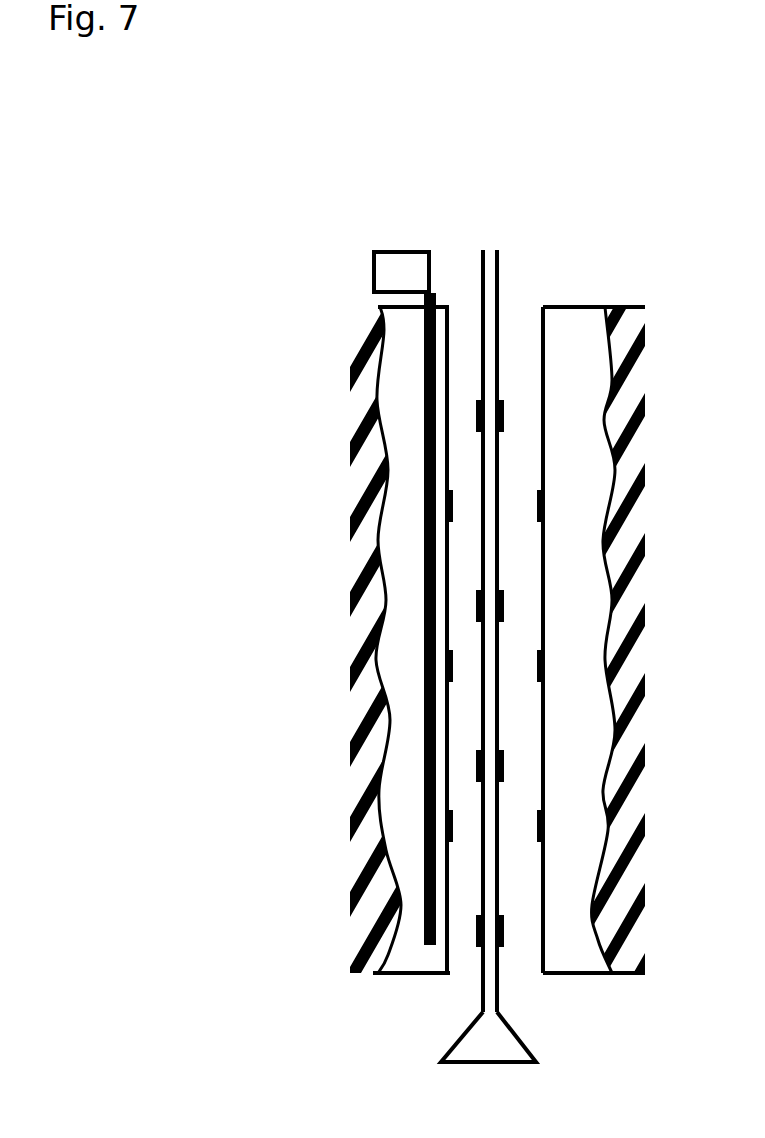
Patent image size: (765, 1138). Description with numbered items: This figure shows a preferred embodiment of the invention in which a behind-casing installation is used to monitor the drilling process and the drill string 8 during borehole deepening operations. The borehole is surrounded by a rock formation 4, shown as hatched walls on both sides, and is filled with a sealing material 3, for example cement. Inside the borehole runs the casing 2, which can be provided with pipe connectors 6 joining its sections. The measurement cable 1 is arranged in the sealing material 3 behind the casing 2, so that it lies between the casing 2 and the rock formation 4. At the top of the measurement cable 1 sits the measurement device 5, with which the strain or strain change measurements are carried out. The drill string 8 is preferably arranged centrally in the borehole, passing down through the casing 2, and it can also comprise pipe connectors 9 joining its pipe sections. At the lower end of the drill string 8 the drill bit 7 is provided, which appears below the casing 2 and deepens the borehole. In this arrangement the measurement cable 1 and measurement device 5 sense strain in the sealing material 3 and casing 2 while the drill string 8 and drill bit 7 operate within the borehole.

The measurement cable 1 is at (424, 530).
The casing 2 is at (447, 422).
The sealing material 3 is at (403, 457).
The rock formation 4 is at (373, 615).
The measurement device 5 is at (373, 251).
The pipe connector 6 is at (447, 810).
The drill bit 7 is at (442, 1062).
The drill string 8 is at (502, 347).
The pipe connector 9 is at (500, 402).